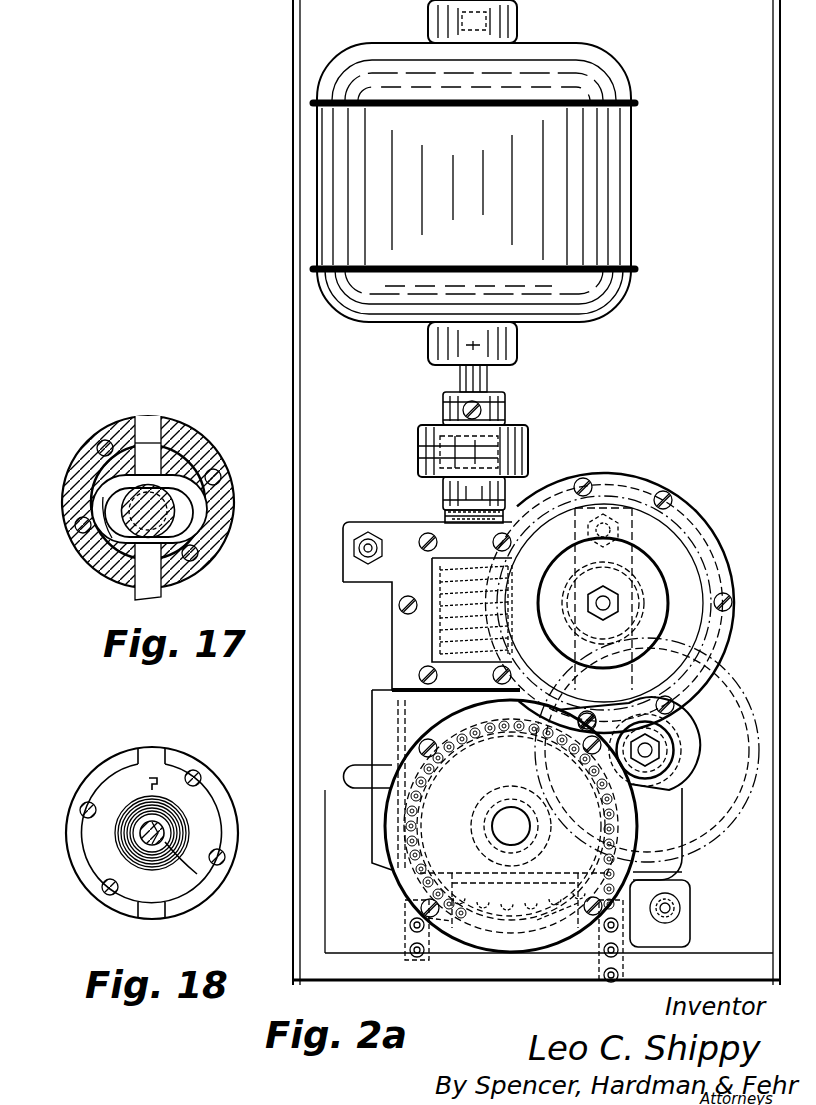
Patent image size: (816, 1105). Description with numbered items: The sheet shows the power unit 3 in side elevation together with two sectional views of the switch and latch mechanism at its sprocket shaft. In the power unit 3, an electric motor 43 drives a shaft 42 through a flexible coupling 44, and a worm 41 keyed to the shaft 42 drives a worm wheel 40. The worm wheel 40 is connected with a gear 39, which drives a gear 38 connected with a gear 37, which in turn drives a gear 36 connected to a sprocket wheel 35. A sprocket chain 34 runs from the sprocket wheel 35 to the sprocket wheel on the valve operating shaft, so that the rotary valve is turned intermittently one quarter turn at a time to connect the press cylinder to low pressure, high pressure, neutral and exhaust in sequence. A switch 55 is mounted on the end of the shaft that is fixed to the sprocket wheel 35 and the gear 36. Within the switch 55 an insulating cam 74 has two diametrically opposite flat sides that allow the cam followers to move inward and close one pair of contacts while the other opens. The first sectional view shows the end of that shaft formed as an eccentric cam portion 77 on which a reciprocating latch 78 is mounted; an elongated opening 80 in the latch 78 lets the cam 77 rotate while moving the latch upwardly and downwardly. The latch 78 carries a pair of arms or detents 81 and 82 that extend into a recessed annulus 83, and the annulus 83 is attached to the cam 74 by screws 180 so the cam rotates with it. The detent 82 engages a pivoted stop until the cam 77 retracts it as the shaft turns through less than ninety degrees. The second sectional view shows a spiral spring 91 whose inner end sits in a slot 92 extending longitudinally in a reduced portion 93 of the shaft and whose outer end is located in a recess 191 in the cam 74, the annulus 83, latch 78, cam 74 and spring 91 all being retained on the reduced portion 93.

In FIG. 2A, the fuel feeding apparatus / housing 3 is at (690, 327).
In FIG. 2A, the sprocket chain 34 is at (405, 935).
In FIG. 2A, the sprocket wheel 35 is at (505, 930).
In FIG. 2A, the gear 36 is at (545, 928).
In FIG. 2A, the gear 37 is at (690, 756).
In FIG. 2A, the gear 38 is at (728, 675).
In FIG. 2A, the gear 39 is at (640, 597).
In FIG. 2A, the worm wheel 40 is at (686, 545).
In FIG. 2A, the worm 41 is at (440, 616).
In FIG. 2A, the shaft 42 is at (446, 513).
In FIG. 2A, the electric motor 43 is at (632, 160).
In FIG. 2A, the flexible coupling 44 is at (530, 432).
In FIG. 2A, the switch 55 is at (416, 755).
In FIG. 18, the cam 74 is at (228, 790).
In FIG. 17, the eccentric cam portion 77 is at (175, 511).
In FIG. 17, the reciprocating latch 78 is at (150, 443).
In FIG. 17, the elongated opening 80 is at (108, 520).
In FIG. 17, the arm or detent 81 is at (170, 458).
In FIG. 17, the arm or detent 82 is at (158, 590).
In FIG. 17, the recessed annulus 83 is at (106, 440).
In FIG. 18, the spiral spring 91 is at (185, 820).
In FIG. 18, the slot 92 is at (165, 833).
In FIG. 18, the reduced portion 93 is at (170, 845).
In FIG. 17, the screws 180 is at (98, 452).
In FIG. 18, the screws 180 is at (200, 772).
In FIG. 18, the recess 191 is at (150, 784).